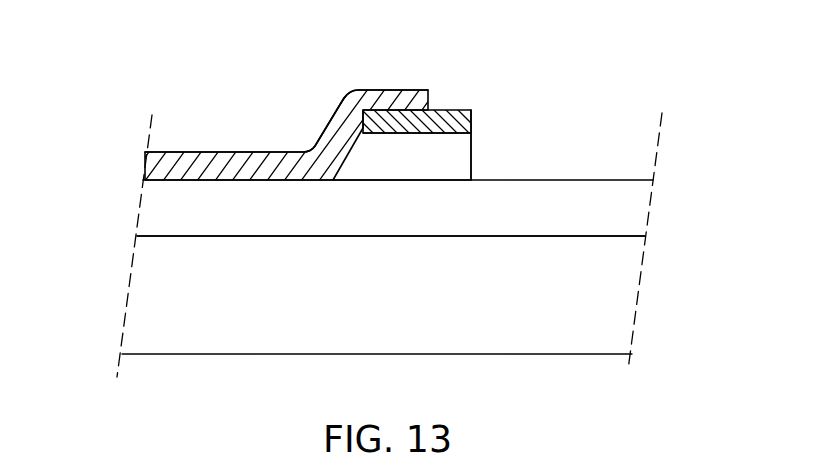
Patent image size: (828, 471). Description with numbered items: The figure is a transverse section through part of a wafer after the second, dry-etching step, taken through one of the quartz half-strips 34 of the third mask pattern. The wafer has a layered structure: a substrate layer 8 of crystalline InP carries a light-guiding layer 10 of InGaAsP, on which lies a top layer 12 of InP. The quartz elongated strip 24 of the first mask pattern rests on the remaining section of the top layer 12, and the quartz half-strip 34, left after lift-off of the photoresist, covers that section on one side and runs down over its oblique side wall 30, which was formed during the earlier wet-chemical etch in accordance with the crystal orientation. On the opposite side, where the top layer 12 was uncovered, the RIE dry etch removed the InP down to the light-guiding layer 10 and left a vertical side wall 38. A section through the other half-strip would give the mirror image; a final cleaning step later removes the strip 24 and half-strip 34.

The substrate layer 8 is at (175, 268).
The light-guiding layer 10 is at (180, 212).
The top layer 12 is at (450, 155).
The elongated strip 24 is at (440, 112).
The oblique side wall 30 is at (313, 150).
The half-strip 34 is at (340, 132).
The vertical side wall 38 is at (473, 162).